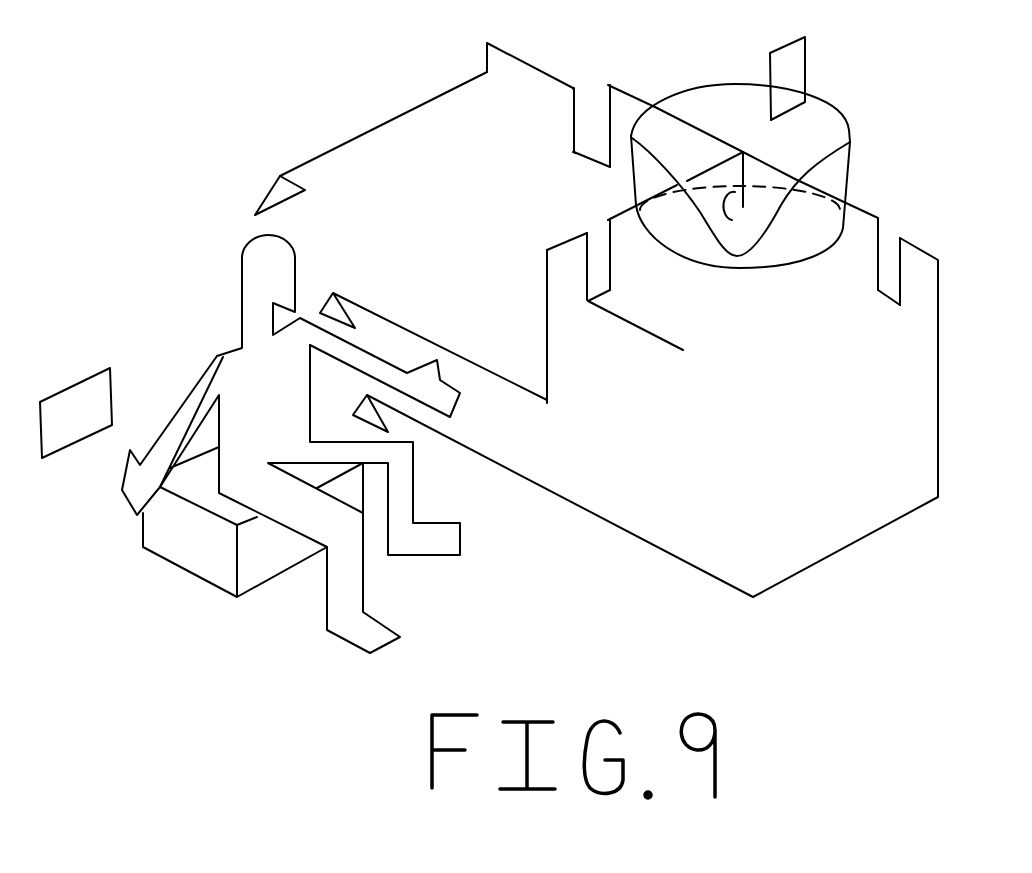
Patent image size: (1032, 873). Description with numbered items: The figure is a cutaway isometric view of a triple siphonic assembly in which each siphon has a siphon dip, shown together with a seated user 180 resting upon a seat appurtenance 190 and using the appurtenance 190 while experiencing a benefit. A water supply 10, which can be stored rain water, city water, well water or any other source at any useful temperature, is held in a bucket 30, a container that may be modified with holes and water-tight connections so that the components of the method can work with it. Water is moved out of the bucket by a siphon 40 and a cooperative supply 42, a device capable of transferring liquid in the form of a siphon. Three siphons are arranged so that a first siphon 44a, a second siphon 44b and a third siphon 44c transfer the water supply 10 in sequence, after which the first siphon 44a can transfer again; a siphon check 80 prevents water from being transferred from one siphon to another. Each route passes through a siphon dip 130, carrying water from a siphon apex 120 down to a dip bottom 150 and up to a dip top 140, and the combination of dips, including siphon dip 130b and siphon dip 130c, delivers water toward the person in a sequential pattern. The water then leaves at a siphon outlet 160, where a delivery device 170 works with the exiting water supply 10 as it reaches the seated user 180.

The water supply 10 is at (807, 83).
The bucket 30 is at (740, 176).
The siphon 40 is at (708, 135).
The cooperative supply 42 is at (733, 206).
The first siphon 44a is at (573, 127).
The second siphon 44b is at (547, 387).
The third siphon 44c is at (712, 575).
The siphon check 80 is at (612, 250).
The siphon apex 120 is at (611, 85).
The siphon dip 130 is at (608, 80).
The siphon dip 130b is at (613, 290).
The siphon dip 130c is at (872, 293).
The dip top 140 is at (574, 88).
The dip bottom 150 is at (573, 153).
The siphon outlet 160 is at (280, 175).
The delivery device 170 is at (267, 198).
The seated user 180 is at (217, 357).
The appurtenance 190 is at (113, 390).